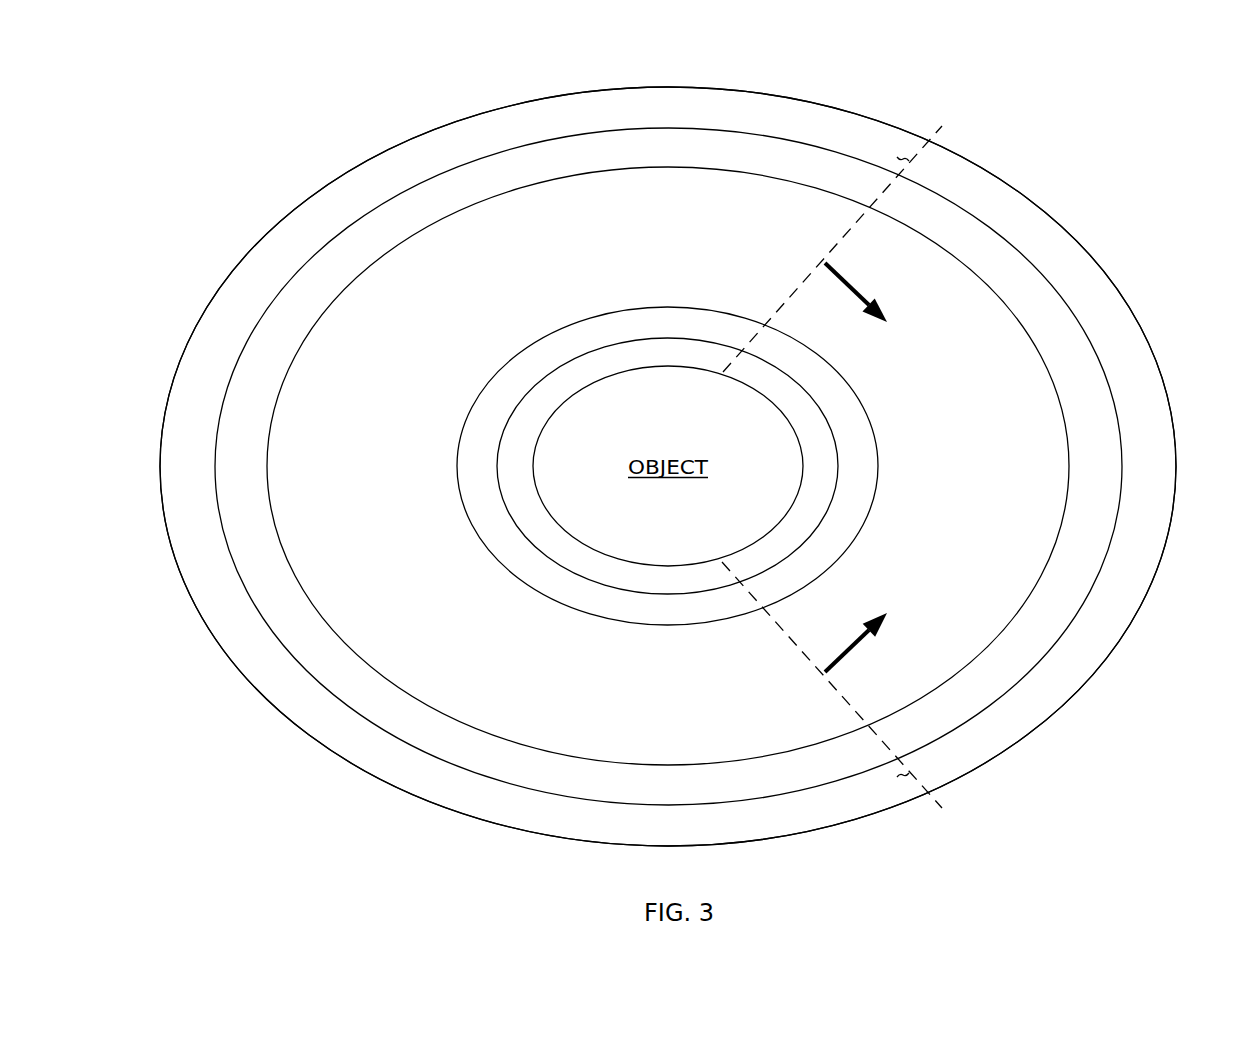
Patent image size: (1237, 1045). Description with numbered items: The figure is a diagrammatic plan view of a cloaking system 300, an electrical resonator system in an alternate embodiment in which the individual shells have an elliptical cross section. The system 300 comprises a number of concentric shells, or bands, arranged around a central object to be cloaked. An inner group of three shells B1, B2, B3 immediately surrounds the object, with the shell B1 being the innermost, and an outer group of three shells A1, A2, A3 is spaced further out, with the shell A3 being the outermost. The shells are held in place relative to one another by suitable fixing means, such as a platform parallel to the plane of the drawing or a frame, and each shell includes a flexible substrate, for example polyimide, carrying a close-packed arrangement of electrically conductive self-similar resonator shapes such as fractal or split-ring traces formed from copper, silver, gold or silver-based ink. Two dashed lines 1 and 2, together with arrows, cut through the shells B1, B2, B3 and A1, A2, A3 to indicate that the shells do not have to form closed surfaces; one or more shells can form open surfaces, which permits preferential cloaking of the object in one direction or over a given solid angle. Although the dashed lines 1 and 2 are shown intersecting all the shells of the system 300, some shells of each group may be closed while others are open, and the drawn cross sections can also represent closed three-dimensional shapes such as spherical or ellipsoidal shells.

The system for cloaking 300 is at (306, 68).
The shell A1 is at (333, 628).
The shell A2 is at (378, 725).
The shell A3 is at (463, 812).
The shell B1 is at (558, 405).
The shell B2 is at (505, 430).
The shell B3 is at (458, 440).
The dashed line 1 is at (943, 128).
The dashed line 2 is at (943, 806).